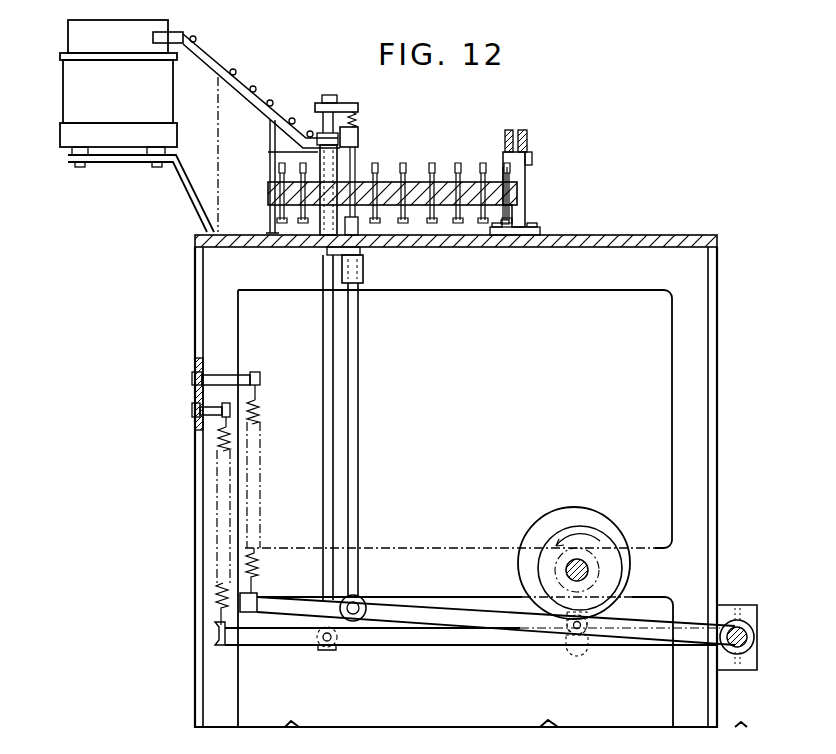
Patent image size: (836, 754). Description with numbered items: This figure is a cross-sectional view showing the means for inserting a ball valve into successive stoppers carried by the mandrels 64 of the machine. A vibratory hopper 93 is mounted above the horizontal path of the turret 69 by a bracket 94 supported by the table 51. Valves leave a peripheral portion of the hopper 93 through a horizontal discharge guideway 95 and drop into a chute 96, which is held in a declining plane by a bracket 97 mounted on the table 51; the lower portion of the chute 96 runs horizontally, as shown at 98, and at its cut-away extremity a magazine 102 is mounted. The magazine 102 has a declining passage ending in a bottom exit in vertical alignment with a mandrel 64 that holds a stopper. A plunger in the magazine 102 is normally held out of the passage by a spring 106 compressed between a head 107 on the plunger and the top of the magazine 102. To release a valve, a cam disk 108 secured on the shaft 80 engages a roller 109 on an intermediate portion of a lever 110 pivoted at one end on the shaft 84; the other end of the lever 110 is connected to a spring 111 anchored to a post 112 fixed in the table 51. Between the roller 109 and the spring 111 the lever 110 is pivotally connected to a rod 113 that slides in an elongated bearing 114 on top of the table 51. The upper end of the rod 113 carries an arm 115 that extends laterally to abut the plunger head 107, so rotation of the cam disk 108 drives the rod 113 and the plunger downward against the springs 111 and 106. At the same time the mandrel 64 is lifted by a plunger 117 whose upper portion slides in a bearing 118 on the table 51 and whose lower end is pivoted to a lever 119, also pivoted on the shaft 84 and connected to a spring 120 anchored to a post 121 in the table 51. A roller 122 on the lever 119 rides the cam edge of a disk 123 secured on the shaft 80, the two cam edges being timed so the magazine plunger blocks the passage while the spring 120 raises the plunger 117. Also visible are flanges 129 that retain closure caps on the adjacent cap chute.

The table 51 is at (638, 236).
The mandrel 64 is at (378, 180).
The turret 69 is at (414, 180).
The shaft 80 is at (590, 571).
The shaft 84 is at (754, 646).
The vibratory hopper 93 is at (80, 84).
The bracket 94 is at (187, 191).
The discharge guideway 95 is at (178, 33).
The chute 96 is at (204, 58).
The bracket 97 is at (220, 128).
The horizontal chute portion 98 is at (276, 142).
The magazine 102 is at (360, 137).
The spring 106 is at (360, 122).
The head 107 is at (348, 116).
The cam disk 108 is at (547, 530).
The roller 109 is at (577, 648).
The lever 110 is at (270, 646).
The spring 111 is at (217, 503).
The post 112 is at (218, 424).
The rod 113 is at (322, 464).
The bearing 114 is at (317, 228).
The arm 115 is at (320, 106).
The plunger 117 is at (359, 464).
The bearing 118 is at (366, 271).
The lever 119 is at (386, 618).
The spring 120 is at (266, 452).
The post 121 is at (261, 373).
The roller 122 is at (589, 650).
The disk 123 is at (606, 542).
The flanges 129 is at (530, 143).